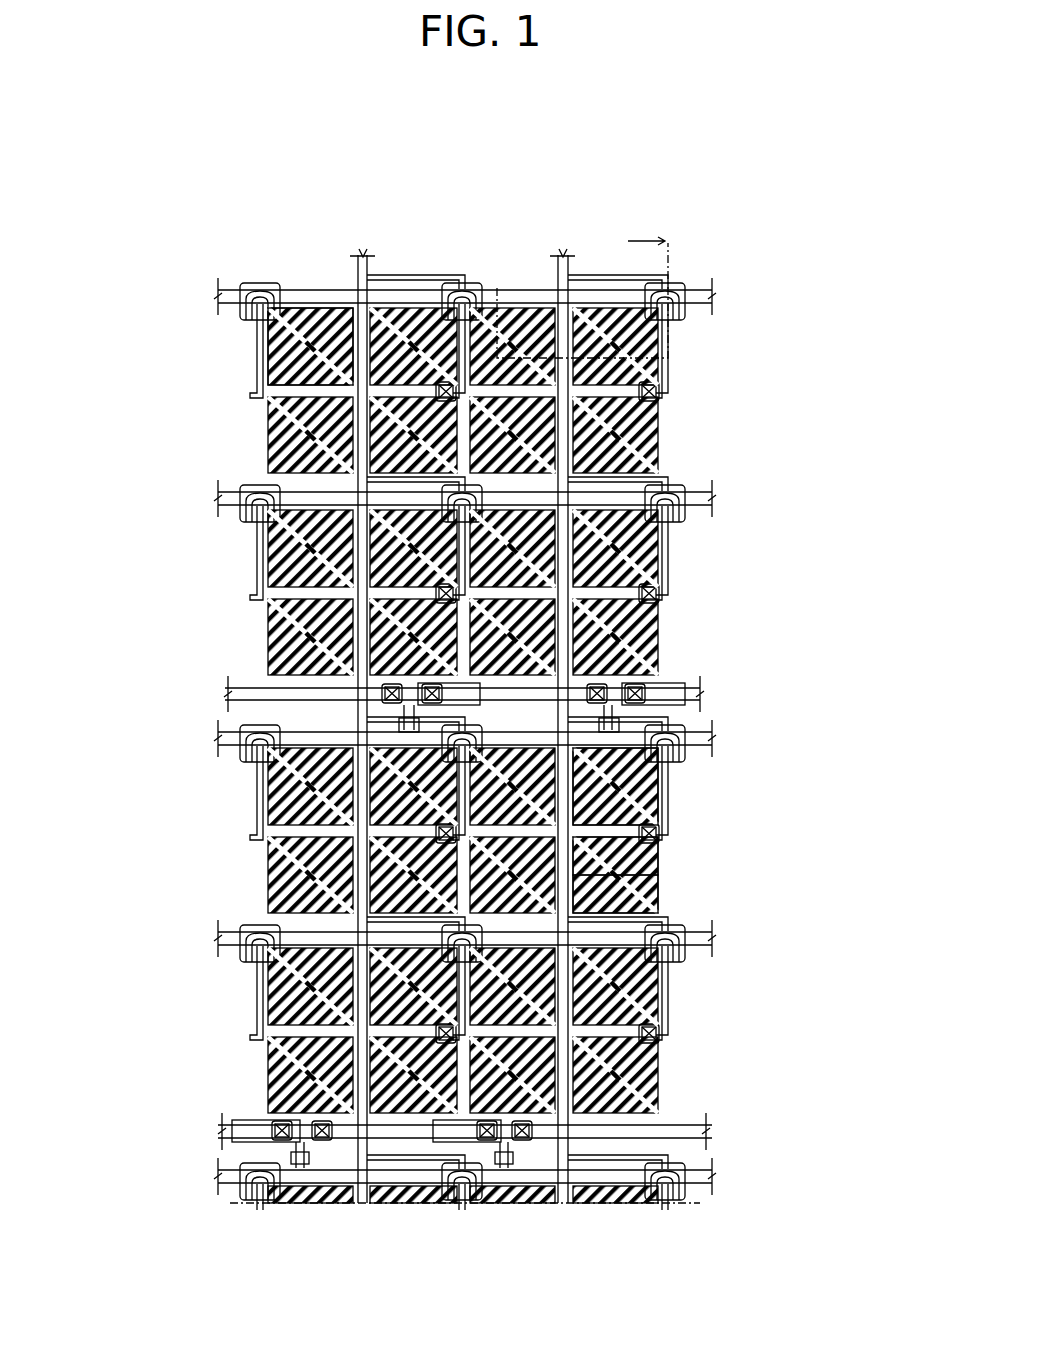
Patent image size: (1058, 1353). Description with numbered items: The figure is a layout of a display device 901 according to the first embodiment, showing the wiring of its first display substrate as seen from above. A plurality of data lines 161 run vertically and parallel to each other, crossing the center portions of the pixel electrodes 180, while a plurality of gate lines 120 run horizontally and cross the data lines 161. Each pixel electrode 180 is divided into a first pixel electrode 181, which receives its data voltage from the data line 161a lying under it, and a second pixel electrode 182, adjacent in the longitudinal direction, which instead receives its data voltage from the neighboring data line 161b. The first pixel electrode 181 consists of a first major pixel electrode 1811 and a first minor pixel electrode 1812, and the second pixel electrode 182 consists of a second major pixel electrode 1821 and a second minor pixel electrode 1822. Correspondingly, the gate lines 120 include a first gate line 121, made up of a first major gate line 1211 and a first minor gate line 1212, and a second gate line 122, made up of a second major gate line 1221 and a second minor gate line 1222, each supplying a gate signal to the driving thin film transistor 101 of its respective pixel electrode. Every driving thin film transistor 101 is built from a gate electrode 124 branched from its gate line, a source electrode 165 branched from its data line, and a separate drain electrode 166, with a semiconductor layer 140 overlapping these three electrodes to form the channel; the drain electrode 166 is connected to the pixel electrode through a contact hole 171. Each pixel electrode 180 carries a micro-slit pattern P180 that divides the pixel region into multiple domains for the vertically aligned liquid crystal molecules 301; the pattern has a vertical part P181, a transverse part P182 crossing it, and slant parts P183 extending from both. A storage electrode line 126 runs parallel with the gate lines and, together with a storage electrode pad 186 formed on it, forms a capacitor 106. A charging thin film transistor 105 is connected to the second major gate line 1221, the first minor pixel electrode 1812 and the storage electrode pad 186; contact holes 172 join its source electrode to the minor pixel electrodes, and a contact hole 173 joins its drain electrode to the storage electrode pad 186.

The display device 901 is at (483, 134).
The data line 161 is at (548, 198).
The data line 161a is at (366, 256).
The adjacent data line 161b is at (562, 256).
The liquid crystal molecules 301 is at (322, 352).
The gate lines 120 is at (887, 420).
The first gate line 121 is at (837, 310).
The second gate line 122 is at (837, 748).
The first major gate line 1211 is at (720, 296).
The first minor gate line 1212 is at (720, 497).
The second major gate line 1221 is at (720, 735).
The second minor gate line 1222 is at (720, 935).
The driving thin film transistor 101 is at (689, 317).
The gate electrode 124 is at (678, 328).
The semiconductor layer 140 is at (668, 286).
The source electrode 165 is at (684, 288).
The drain electrode 166 is at (670, 355).
The contact hole 171 is at (665, 402).
The pixel electrode 180 is at (51, 535).
The first pixel electrode 181 is at (111, 428).
The second pixel electrode 182 is at (111, 865).
The first major pixel electrode 1811 is at (268, 408).
The first minor pixel electrode 1812 is at (268, 605).
The second major pixel electrode 1821 is at (268, 850).
The second minor pixel electrode 1822 is at (268, 1048).
The micro-slit pattern P180 is at (736, 815).
The vertical part P181 is at (607, 832).
The transverse part P182 is at (578, 864).
The slant parts P183 is at (647, 798).
The capacitor 106 is at (415, 1265).
The storage electrode line 126 is at (225, 691).
The contact holes 172 is at (642, 688).
The contact hole 173 is at (620, 700).
The storage electrode pad 186 is at (427, 1142).
The charging thin film transistor 105 is at (515, 1188).